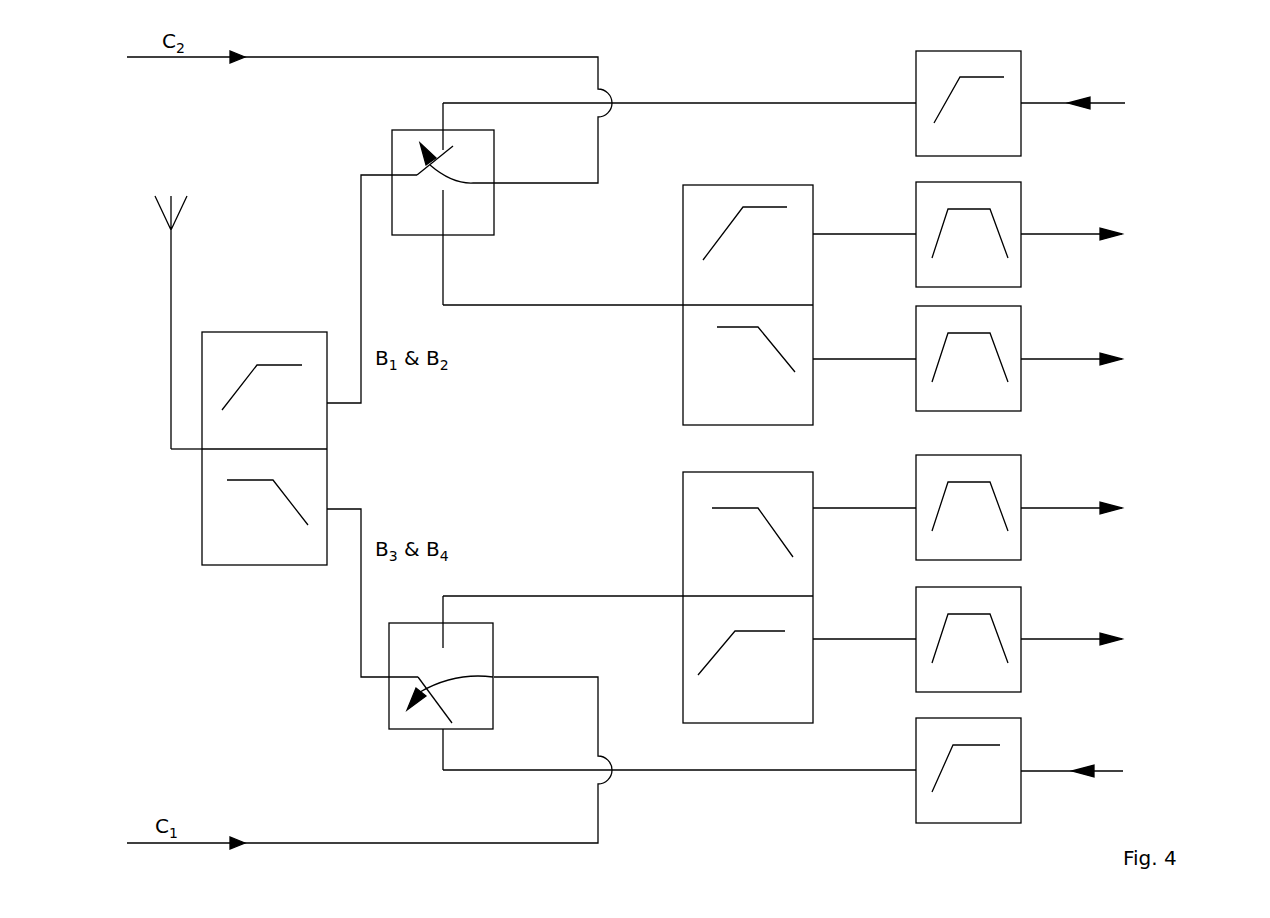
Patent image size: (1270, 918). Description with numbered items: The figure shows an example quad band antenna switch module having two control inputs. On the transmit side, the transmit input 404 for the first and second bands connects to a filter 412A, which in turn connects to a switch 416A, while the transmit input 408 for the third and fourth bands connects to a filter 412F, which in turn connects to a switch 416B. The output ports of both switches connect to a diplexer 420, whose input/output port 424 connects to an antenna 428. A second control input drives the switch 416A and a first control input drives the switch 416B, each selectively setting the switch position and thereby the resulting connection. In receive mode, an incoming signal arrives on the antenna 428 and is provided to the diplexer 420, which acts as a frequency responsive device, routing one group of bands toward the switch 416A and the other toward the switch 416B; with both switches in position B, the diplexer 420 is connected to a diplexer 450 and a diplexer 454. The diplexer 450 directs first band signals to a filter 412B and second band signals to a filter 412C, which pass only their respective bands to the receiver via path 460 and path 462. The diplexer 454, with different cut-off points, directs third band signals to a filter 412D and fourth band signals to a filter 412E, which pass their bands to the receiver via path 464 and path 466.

The transmit input 404 is at (1045, 105).
The transmit input 408 is at (1043, 773).
The filter 412A is at (968, 103).
The filter 412B is at (968, 234).
The filter 412C is at (968, 358).
The filter 412D is at (968, 507).
The filter 412E is at (968, 639).
The filter 412F is at (968, 770).
The switch 416A is at (493, 200).
The switch 416B is at (388, 697).
The diplexer 420 is at (202, 512).
The input/output port 424 is at (170, 450).
The antenna 428 is at (162, 212).
The diplexer 450 is at (682, 348).
The diplexer 454 is at (682, 498).
The path 460 is at (1043, 237).
The path 462 is at (1043, 362).
The path 464 is at (1043, 511).
The path 466 is at (1043, 642).